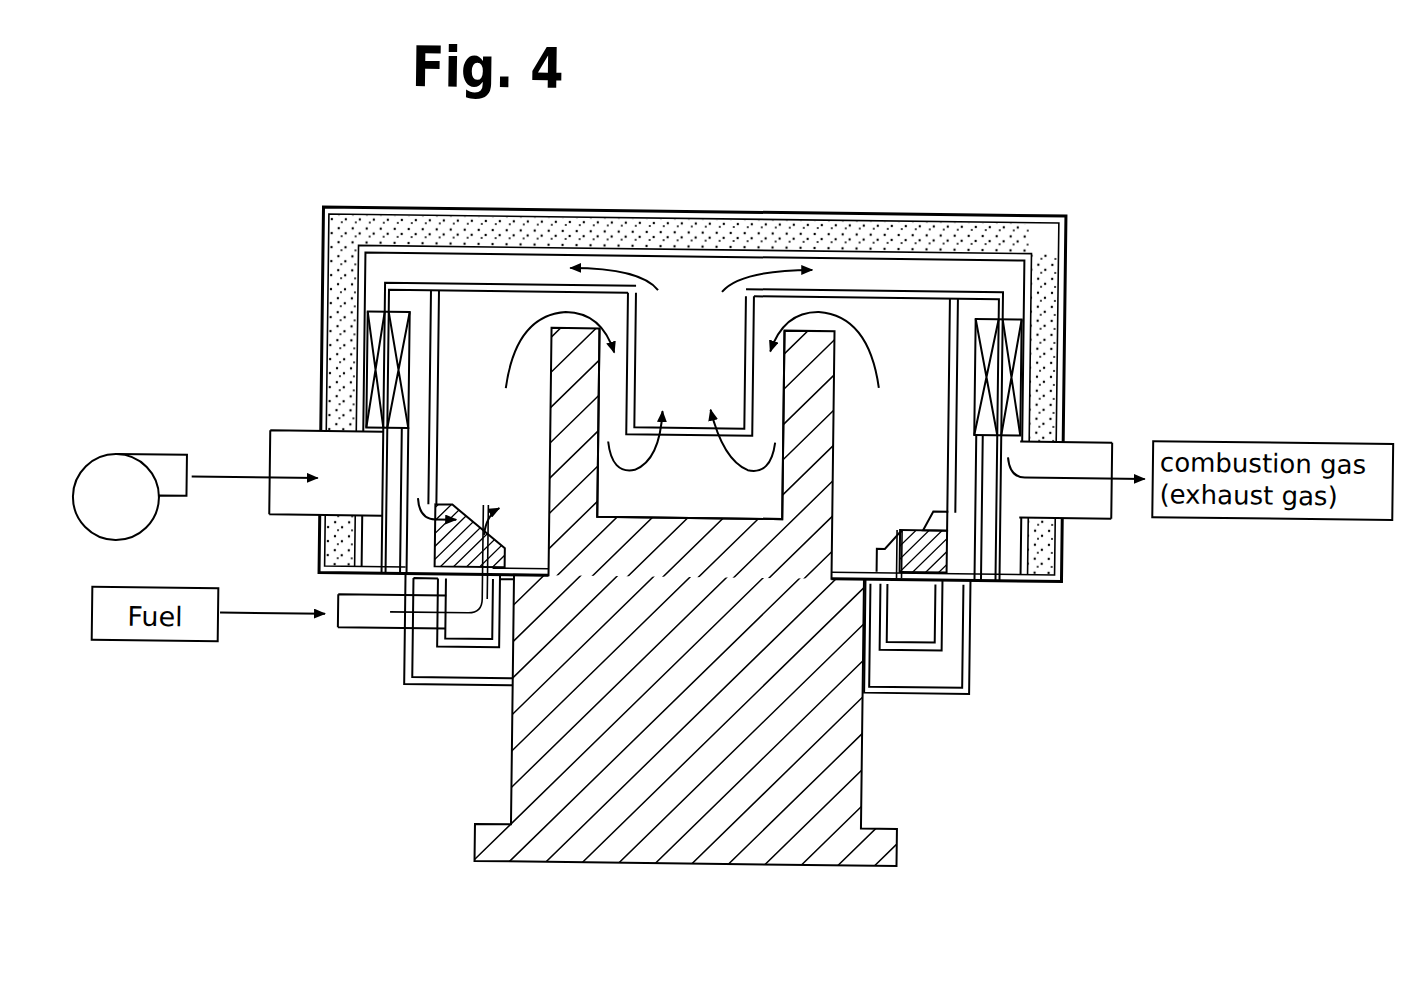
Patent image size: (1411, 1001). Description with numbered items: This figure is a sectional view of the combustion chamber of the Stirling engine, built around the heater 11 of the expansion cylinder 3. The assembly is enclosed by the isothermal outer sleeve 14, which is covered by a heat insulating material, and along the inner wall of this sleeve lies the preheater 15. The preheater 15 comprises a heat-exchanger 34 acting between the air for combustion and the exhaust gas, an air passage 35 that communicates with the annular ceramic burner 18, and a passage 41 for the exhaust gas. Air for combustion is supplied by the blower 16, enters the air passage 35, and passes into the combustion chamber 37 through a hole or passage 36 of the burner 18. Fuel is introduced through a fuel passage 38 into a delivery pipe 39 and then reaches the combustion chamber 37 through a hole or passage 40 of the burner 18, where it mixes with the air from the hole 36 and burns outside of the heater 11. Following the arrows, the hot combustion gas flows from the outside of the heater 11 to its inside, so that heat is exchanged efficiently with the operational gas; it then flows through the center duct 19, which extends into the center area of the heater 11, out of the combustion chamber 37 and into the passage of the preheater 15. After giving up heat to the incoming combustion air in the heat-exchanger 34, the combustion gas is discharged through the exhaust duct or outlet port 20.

The expansion cylinder 3 is at (834, 787).
The heater 11 is at (821, 431).
The isothermal outer sleeve 14 is at (792, 230).
The preheater 15 is at (394, 361).
The blower 16 is at (121, 468).
The annular ceramic burner 18 is at (931, 546).
The center duct 19 is at (639, 329).
The exhaust duct / outlet port 20 is at (1087, 494).
The heat-exchanger 34 is at (990, 325).
The air passage 35 is at (966, 384).
The hole or passage of the burner 36 is at (922, 520).
The combustion chamber 37 is at (882, 349).
The fuel passage 38 is at (375, 616).
The delivery pipe 39 is at (918, 626).
The hole or passage of the burner 40 is at (897, 541).
The passage for the exhaust gas 41 is at (373, 292).